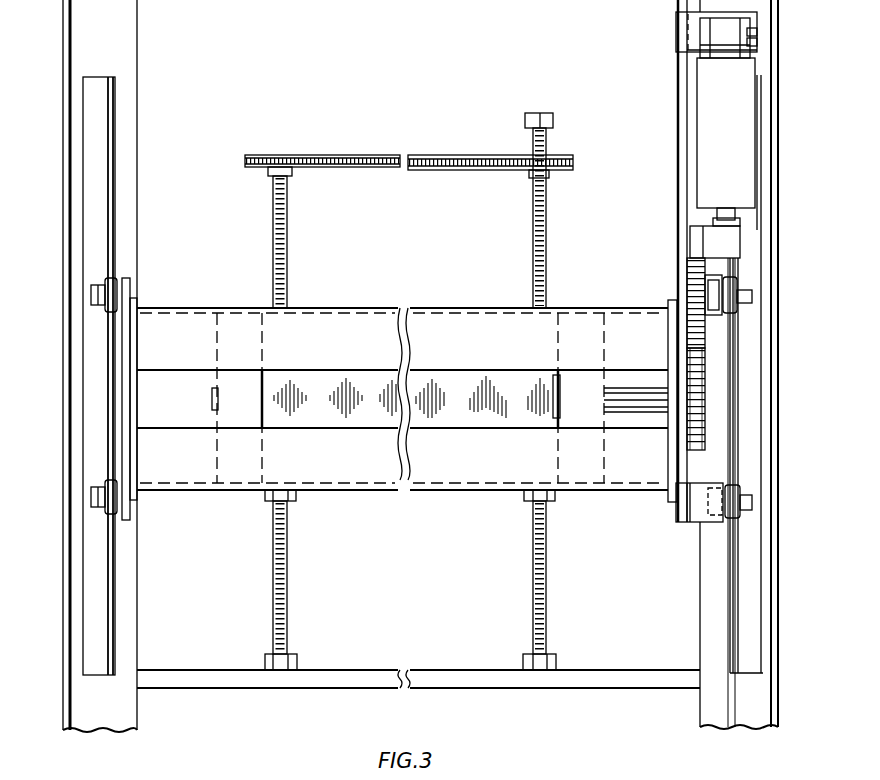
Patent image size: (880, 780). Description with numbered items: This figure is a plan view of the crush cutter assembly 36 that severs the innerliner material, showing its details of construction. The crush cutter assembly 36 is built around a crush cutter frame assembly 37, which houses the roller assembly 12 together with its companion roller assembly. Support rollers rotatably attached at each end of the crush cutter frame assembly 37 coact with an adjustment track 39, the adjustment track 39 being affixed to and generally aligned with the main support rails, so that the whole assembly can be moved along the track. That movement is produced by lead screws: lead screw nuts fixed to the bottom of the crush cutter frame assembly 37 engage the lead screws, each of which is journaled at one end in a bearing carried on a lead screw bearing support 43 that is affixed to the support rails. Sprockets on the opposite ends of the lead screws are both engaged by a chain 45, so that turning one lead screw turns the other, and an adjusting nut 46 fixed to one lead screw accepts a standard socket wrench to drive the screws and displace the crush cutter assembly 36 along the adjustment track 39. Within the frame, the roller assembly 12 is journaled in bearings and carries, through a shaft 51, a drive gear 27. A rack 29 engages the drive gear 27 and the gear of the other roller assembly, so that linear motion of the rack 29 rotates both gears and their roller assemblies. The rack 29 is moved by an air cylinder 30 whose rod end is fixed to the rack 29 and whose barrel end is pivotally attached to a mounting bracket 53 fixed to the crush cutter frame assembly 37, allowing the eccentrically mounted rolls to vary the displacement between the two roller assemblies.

The roller assembly 12 is at (450, 385).
The drive gear 27 is at (700, 398).
The rack 29 is at (695, 290).
The air cylinder 30 is at (740, 108).
The crush cutter assembly 36 is at (300, 142).
The crush cutter frame assembly 37 is at (198, 482).
The adjustment track 39 is at (748, 621).
The lead screw bearing support 43 is at (574, 680).
The chain 45 is at (367, 157).
The adjusting nut 46 is at (541, 116).
The shaft 51 is at (636, 397).
The mounting bracket 53 is at (690, 23).